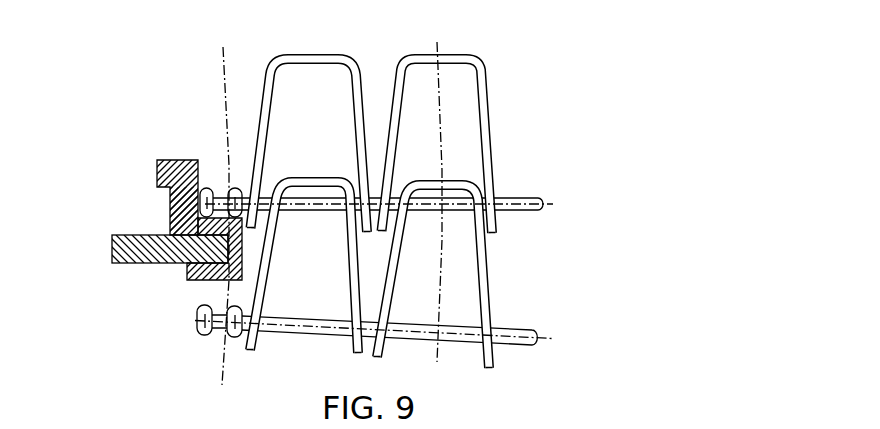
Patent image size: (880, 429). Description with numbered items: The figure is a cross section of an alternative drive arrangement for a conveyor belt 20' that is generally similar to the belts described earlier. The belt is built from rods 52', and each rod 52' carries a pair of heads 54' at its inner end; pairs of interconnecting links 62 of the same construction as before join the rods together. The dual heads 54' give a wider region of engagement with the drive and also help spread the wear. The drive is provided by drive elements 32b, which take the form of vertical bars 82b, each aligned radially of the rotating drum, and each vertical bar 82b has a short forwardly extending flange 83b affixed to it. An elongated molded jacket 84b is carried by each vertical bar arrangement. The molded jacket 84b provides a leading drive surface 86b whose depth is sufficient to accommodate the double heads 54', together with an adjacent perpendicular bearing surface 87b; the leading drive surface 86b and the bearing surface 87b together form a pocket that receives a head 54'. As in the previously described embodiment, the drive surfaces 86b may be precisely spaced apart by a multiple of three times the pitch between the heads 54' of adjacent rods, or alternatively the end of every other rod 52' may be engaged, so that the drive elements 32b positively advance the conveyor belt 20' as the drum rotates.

The conveyor belt 20' is at (391, 193).
The interconnecting links 62 is at (393, 93).
The rods 52' is at (403, 350).
The heads 54' is at (202, 340).
The leading drive surfaces 86b is at (222, 190).
The molded jackets 84b is at (194, 160).
The flange 83b is at (170, 216).
The bearing surface 87b is at (203, 168).
The vertical bars 82b is at (112, 254).
The drive elements 32b is at (165, 190).